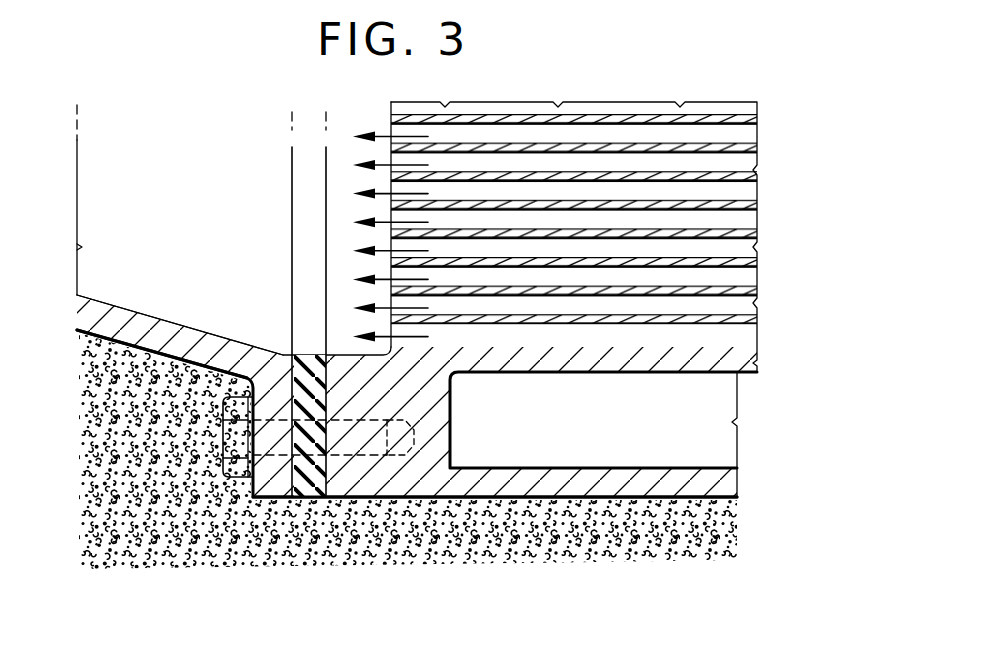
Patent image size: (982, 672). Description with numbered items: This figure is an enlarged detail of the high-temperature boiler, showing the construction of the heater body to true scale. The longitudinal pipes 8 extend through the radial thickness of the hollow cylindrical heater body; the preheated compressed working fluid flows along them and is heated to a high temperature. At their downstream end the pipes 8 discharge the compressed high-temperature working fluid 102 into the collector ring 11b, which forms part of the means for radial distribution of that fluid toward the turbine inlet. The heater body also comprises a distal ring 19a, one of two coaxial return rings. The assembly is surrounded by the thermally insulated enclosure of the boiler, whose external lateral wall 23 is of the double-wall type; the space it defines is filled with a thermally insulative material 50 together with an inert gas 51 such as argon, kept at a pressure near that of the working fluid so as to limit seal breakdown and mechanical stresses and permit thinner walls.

The longitudinal pipes 8 is at (743, 220).
The collector ring 11b is at (197, 243).
The distal ring 19a is at (710, 408).
The external lateral wall 23 is at (748, 534).
The thermally insulative material 50 is at (552, 491).
The inert gas 51 is at (722, 513).
The compressed high-temperature working fluid 102 is at (373, 136).